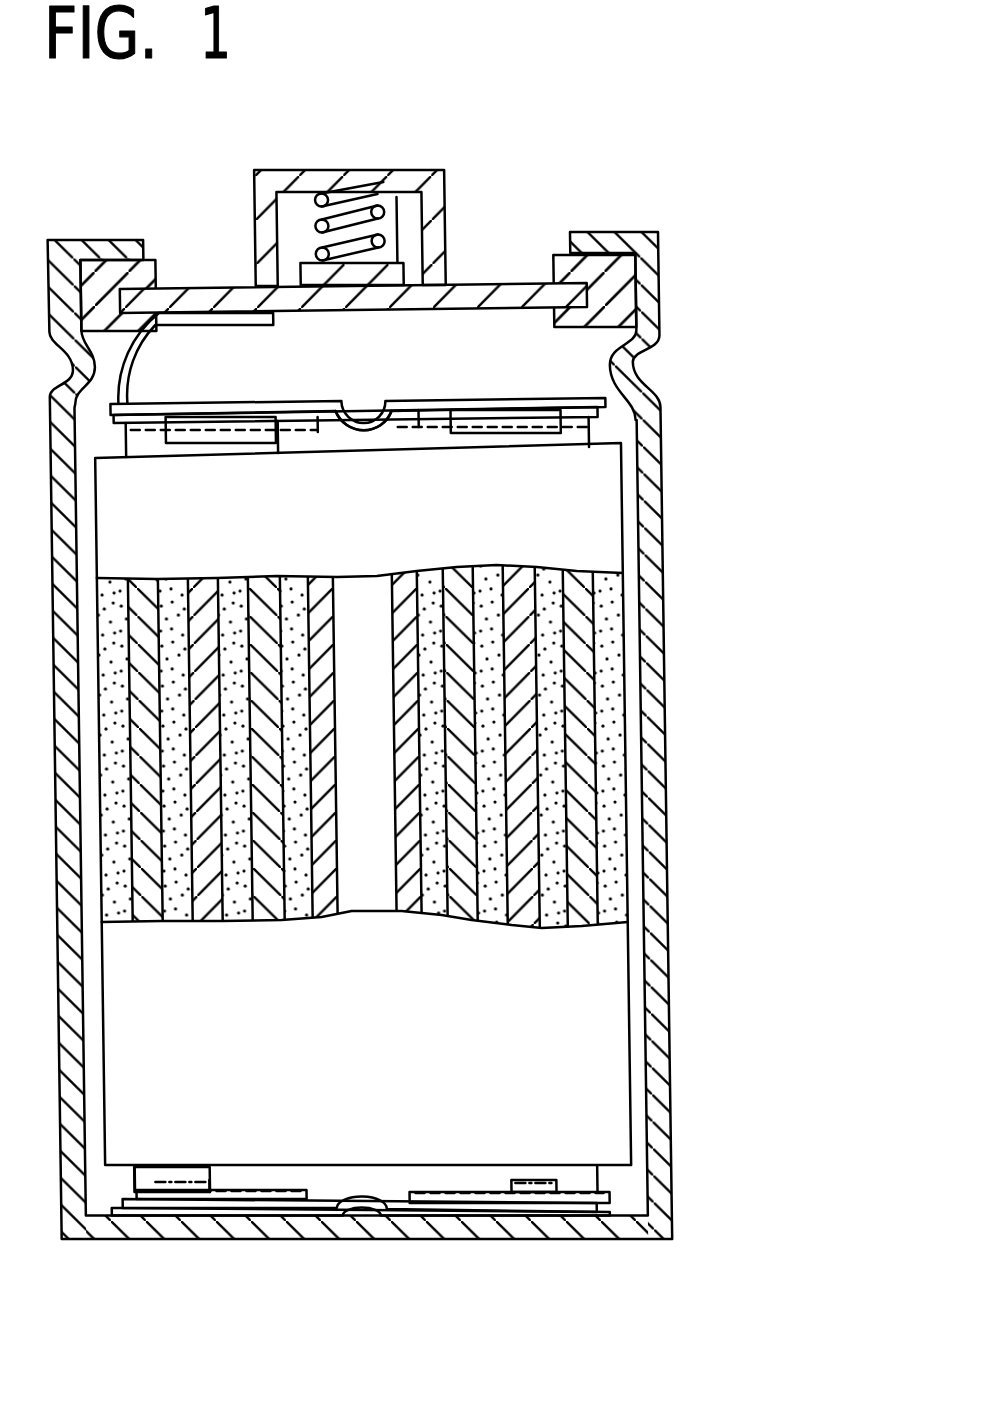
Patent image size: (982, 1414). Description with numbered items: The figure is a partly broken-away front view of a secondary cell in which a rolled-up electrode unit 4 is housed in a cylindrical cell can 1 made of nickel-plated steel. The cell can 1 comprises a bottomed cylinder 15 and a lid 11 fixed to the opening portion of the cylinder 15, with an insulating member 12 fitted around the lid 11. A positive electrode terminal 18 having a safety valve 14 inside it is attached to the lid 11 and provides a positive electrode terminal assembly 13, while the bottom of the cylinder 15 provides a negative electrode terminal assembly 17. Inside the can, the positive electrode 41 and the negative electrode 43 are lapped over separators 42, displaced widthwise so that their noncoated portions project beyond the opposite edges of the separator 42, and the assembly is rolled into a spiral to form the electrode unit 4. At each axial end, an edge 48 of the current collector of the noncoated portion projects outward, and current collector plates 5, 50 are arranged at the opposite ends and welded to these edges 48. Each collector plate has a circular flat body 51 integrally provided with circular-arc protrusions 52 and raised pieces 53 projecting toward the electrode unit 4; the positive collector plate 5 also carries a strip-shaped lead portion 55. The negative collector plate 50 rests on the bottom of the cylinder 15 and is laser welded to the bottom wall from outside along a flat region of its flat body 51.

The cell can 1 is at (662, 268).
The rolled-up electrode unit 4 is at (426, 804).
The current collector plate 5 is at (336, 399).
The lid 11 is at (505, 286).
The insulating member 12 is at (148, 262).
The positive electrode terminal assembly 13 is at (329, 183).
The safety valve 14 is at (396, 195).
The cylinder 15 is at (665, 426).
The negative electrode terminal assembly 17 is at (233, 1238).
The positive electrode terminal 18 is at (304, 185).
The positive electrode 41 is at (520, 870).
The separator 42 is at (553, 803).
The negative electrode 43 is at (580, 731).
The edge of the current collector 48 is at (239, 416).
The current collector plate 50 is at (307, 1214).
The flat body 51 is at (500, 394).
The circular-arc protrusion 52 is at (213, 443).
The raised piece 53 is at (258, 447).
The lead portion 55 is at (197, 323).